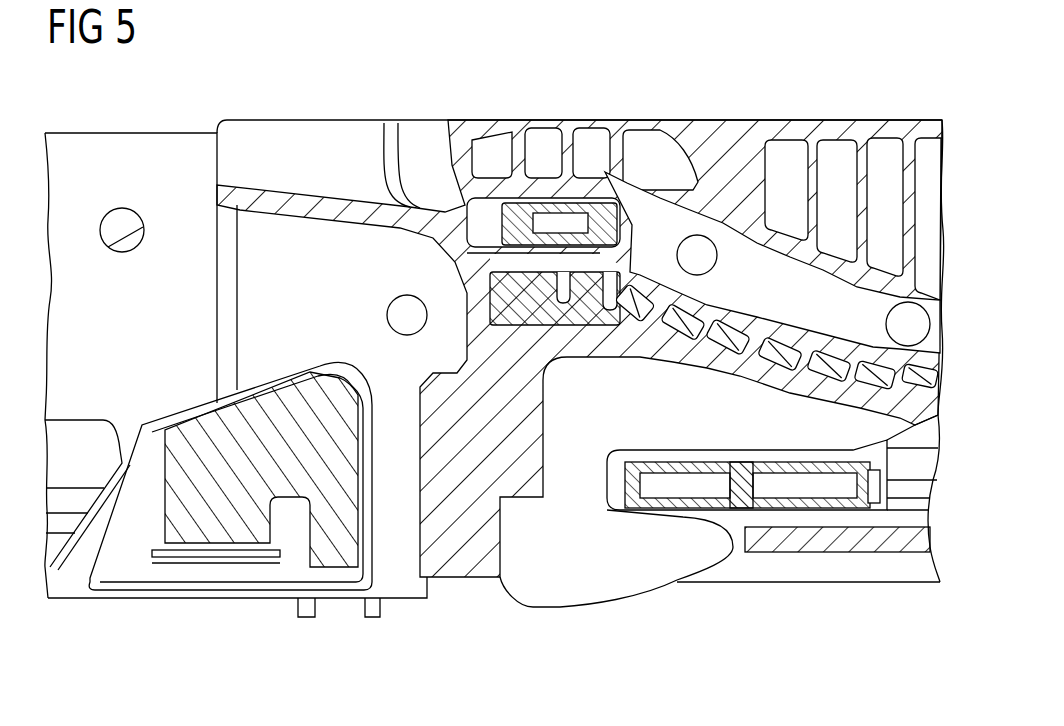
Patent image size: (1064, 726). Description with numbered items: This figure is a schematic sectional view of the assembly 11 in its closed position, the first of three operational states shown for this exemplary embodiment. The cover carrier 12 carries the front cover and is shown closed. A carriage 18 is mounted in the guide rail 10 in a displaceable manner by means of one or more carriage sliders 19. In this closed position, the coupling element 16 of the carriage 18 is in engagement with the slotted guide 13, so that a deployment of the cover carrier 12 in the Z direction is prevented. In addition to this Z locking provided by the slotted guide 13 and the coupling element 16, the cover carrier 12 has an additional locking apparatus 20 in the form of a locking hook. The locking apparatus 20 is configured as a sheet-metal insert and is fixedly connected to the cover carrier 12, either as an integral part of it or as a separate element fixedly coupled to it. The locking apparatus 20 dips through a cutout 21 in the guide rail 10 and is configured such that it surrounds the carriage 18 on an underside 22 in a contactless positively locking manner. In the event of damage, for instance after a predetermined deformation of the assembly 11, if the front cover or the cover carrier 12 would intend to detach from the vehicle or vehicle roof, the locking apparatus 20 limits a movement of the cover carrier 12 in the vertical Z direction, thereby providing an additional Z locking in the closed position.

The guide rail 10 is at (920, 545).
The assembly 11 is at (902, 79).
The cover carrier 12 is at (703, 126).
The slotted guide 13 is at (778, 272).
The coupling element 16 is at (590, 207).
The carriage 18 is at (742, 510).
The carriage slider 19 is at (857, 510).
The locking apparatus 20 is at (581, 600).
The cutout 21 is at (745, 566).
The underside 22 is at (700, 523).